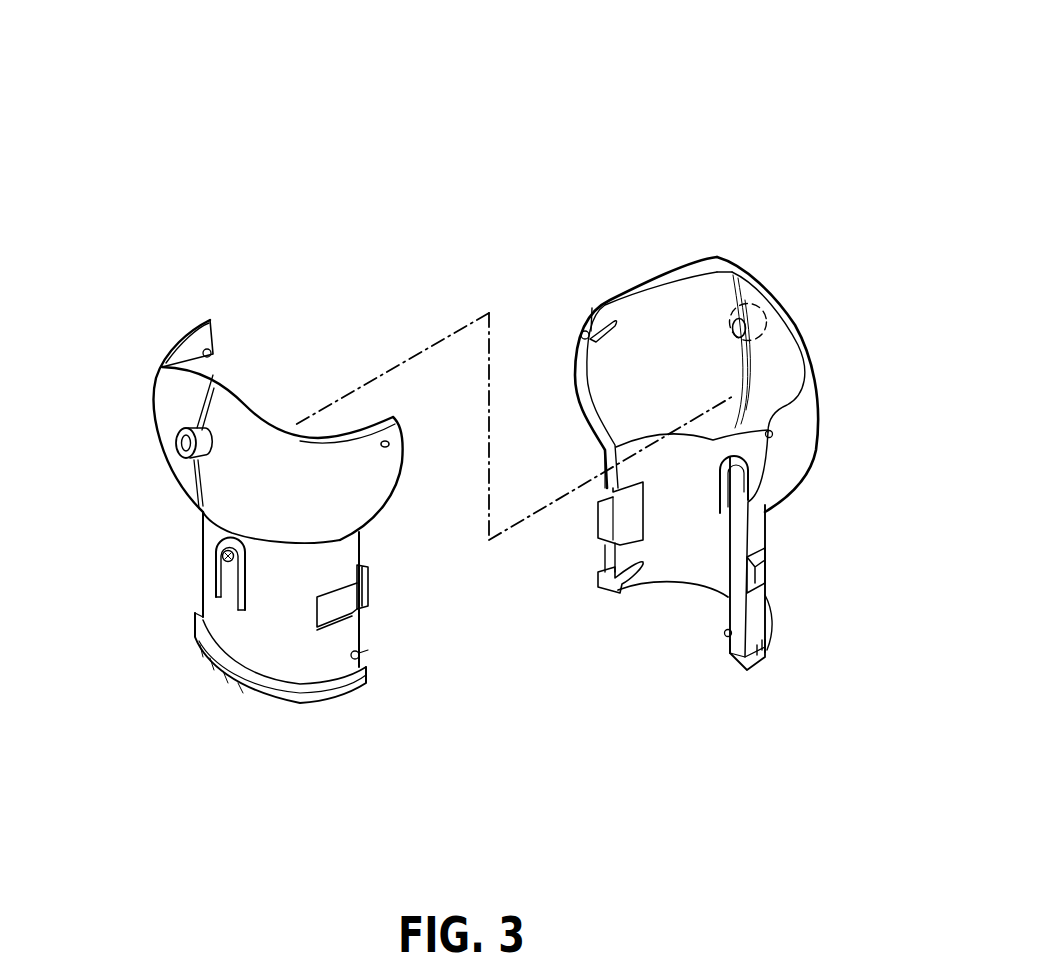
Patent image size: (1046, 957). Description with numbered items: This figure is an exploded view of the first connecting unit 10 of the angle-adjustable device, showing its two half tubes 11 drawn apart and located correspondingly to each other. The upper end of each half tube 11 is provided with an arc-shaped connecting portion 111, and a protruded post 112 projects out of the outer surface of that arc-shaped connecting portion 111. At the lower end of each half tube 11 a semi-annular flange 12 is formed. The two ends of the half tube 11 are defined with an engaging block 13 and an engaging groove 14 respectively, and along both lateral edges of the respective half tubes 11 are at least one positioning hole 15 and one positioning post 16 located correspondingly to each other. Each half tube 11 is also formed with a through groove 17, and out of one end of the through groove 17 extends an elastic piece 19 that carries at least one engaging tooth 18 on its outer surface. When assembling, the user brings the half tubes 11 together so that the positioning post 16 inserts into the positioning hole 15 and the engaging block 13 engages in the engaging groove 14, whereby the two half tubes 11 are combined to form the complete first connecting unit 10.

The first connecting unit 10 is at (493, 118).
The half tube 11 is at (300, 663).
The semi-annular flange 12 is at (253, 692).
The engaging block 13 is at (368, 582).
The engaging groove 14 is at (755, 570).
The positioning hole 15 is at (214, 346).
The positioning post 16 is at (368, 650).
The through groove 17 is at (242, 572).
The engaging tooth 18 is at (227, 555).
The elastic piece 19 is at (223, 568).
The arc-shaped connecting portion 111 is at (258, 418).
The protruded post 112 is at (185, 445).